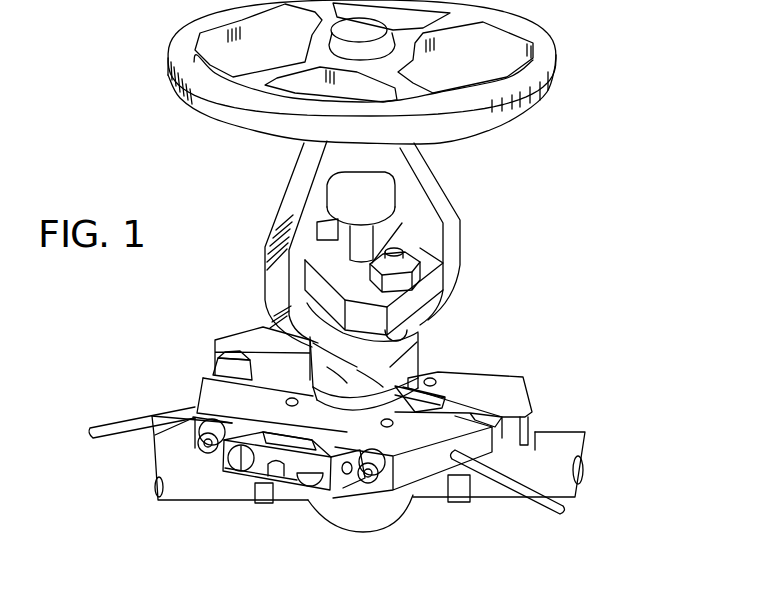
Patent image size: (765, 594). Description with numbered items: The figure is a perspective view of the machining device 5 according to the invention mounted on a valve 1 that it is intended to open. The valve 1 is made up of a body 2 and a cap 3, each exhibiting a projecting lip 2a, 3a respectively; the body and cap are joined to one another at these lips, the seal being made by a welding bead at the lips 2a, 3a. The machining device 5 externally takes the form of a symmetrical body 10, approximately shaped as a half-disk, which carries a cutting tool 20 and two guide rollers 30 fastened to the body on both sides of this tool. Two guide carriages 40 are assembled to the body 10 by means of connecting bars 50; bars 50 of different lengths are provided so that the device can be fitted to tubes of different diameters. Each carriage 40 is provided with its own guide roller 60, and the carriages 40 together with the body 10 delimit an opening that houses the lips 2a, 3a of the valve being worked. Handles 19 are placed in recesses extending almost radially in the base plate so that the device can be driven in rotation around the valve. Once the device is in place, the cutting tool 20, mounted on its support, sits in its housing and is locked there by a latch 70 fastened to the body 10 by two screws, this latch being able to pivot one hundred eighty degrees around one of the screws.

The valve 1 is at (492, 269).
The body 2 is at (410, 492).
The projecting lip 2a is at (423, 410).
The cap 3 is at (405, 355).
The projecting lip 3a is at (410, 387).
The machining device 5 is at (196, 356).
The body 10 is at (475, 443).
The handles 19 is at (128, 425).
The cutting tool 20 is at (290, 418).
The guide rollers 30 is at (307, 390).
The guide carriages 40 is at (517, 388).
The connecting bars 50 is at (528, 437).
The guide roller 60 is at (480, 410).
The latch 70 is at (247, 473).